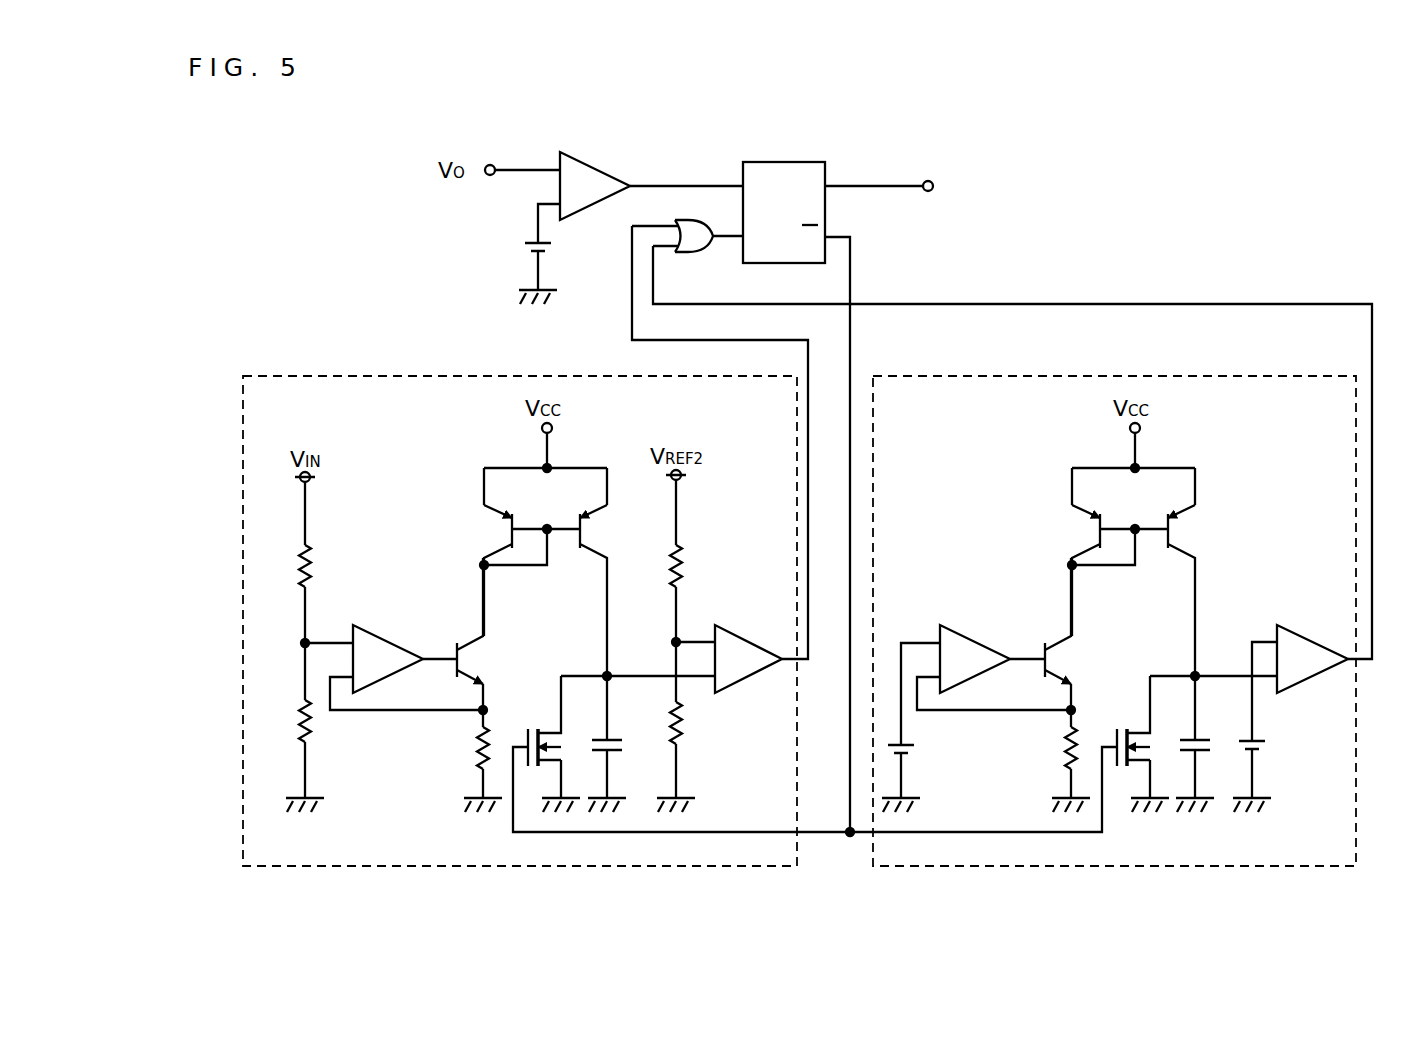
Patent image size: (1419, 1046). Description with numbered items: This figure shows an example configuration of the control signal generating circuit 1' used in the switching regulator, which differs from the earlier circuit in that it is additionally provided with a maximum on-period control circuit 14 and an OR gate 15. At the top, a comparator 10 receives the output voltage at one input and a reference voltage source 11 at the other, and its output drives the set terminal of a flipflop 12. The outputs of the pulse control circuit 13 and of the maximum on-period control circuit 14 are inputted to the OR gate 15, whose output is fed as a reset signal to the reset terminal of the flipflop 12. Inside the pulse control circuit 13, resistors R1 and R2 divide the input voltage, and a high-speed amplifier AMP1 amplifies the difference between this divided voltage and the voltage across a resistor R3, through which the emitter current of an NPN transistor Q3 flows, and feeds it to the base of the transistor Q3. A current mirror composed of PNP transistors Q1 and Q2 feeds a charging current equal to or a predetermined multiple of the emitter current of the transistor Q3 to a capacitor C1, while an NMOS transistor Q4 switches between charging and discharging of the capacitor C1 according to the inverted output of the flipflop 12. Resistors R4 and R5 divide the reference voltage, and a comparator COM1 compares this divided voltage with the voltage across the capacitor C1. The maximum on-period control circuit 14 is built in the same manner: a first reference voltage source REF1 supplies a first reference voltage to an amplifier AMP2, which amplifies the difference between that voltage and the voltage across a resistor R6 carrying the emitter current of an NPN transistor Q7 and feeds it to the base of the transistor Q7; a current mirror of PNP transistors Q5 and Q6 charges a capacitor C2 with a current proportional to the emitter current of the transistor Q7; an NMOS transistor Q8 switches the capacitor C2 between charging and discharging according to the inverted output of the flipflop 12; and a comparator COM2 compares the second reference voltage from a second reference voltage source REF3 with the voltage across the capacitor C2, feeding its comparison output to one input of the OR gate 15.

The control signal generating circuit 1' is at (1195, 125).
The comparator 10 is at (590, 166).
The reference voltage source 11 is at (556, 246).
The flipflop 12 is at (782, 165).
The pulse control circuit 13 is at (521, 868).
The maximum on-period control circuit 14 is at (1113, 868).
The OR gate 15 is at (690, 254).
The resistor R1 is at (294, 570).
The resistor R2 is at (294, 720).
The resistor R3 is at (466, 752).
The resistor R4 is at (696, 564).
The resistor R5 is at (694, 720).
The resistor R6 is at (1049, 752).
The PNP transistor Q1 is at (483, 527).
The PNP transistor Q2 is at (616, 528).
The NPN transistor Q3 is at (491, 659).
The NMOS transistor Q4 is at (533, 721).
The PNP transistor Q5 is at (1066, 527).
The PNP transistor Q6 is at (1204, 528).
The NPN transistor Q7 is at (1079, 659).
The NMOS transistor Q8 is at (1118, 721).
The high-speed amplifier AMP1 is at (386, 636).
The amplifier AMP2 is at (973, 636).
The comparator COM1 is at (746, 636).
The comparator COM2 is at (1306, 636).
The capacitor C1 is at (620, 745).
The capacitor C2 is at (1204, 745).
The first reference voltage source REF1 is at (917, 752).
The second reference voltage source REF3 is at (1268, 748).